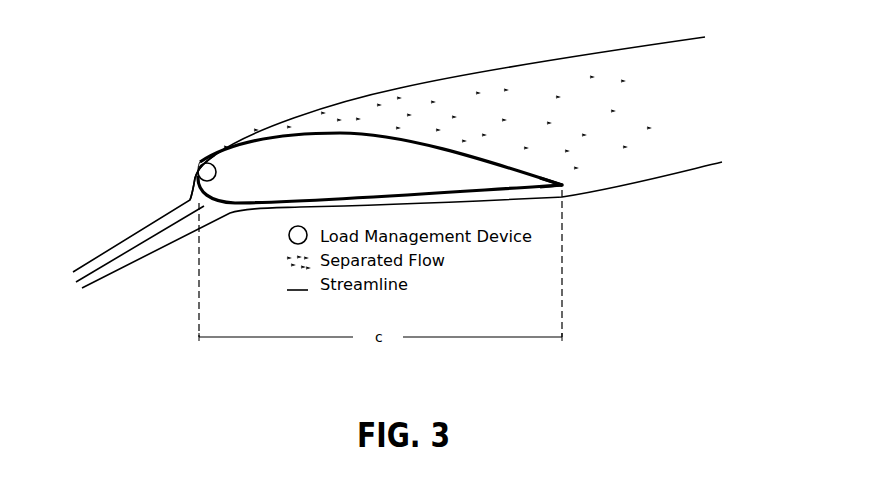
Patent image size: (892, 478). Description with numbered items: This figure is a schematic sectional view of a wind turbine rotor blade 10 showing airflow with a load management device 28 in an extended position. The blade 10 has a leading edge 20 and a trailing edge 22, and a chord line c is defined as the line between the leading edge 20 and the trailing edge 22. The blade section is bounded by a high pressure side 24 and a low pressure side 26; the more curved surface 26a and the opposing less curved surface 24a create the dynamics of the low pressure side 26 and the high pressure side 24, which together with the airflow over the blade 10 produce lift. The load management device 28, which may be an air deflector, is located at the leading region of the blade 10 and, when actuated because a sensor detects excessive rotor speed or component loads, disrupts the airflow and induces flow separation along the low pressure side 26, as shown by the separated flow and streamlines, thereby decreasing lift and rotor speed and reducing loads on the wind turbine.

The rotor blade 10 is at (487, 172).
The leading edge 20 is at (188, 184).
The trailing edge 22 is at (565, 183).
The high pressure side 24 is at (287, 209).
The less curved surface 24a is at (395, 192).
The low pressure side 26 is at (435, 145).
The more curved surface 26a is at (357, 135).
The load management device 28 is at (197, 163).